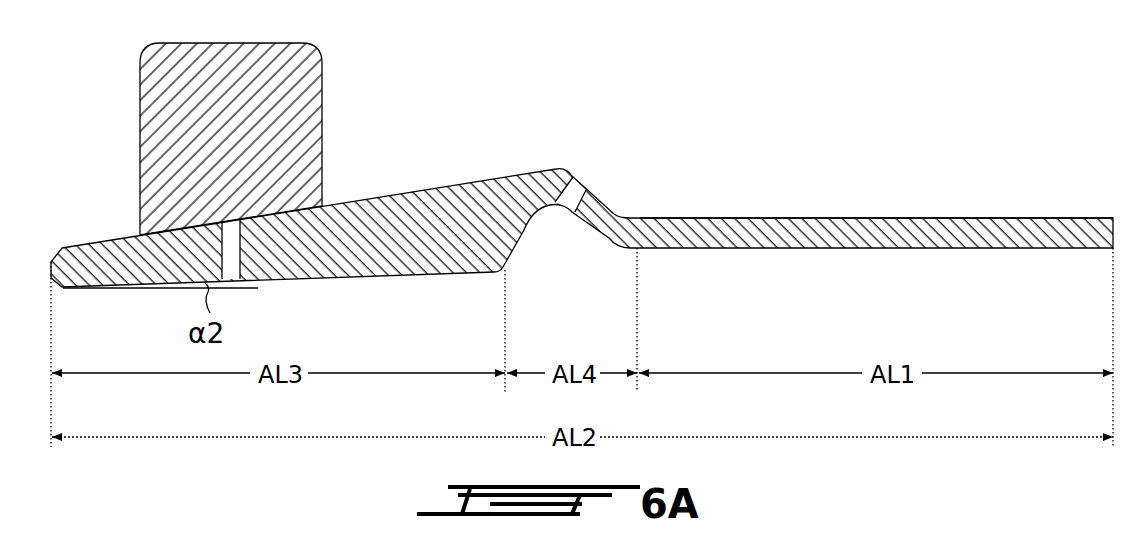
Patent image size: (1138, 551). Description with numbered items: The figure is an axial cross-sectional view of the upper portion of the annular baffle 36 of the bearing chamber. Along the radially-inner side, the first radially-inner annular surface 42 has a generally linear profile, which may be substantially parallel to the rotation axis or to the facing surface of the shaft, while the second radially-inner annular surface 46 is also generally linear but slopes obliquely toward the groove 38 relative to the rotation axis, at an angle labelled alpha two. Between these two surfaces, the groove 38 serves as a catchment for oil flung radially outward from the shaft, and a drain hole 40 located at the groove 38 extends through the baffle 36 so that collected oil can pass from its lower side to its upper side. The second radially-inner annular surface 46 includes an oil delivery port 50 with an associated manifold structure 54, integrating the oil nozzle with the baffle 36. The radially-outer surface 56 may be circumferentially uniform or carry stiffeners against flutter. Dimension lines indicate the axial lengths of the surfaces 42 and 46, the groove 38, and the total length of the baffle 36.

The baffle 36 is at (952, 122).
The groove 38 is at (558, 223).
The drain hole 40 is at (578, 183).
The first radially-inner annular surface 42 is at (845, 248).
The second radially-inner annular surface 46 is at (412, 272).
The oil delivery port 50 is at (230, 248).
The manifold structure 54 is at (190, 118).
The radially-outer surface 56 is at (1015, 218).